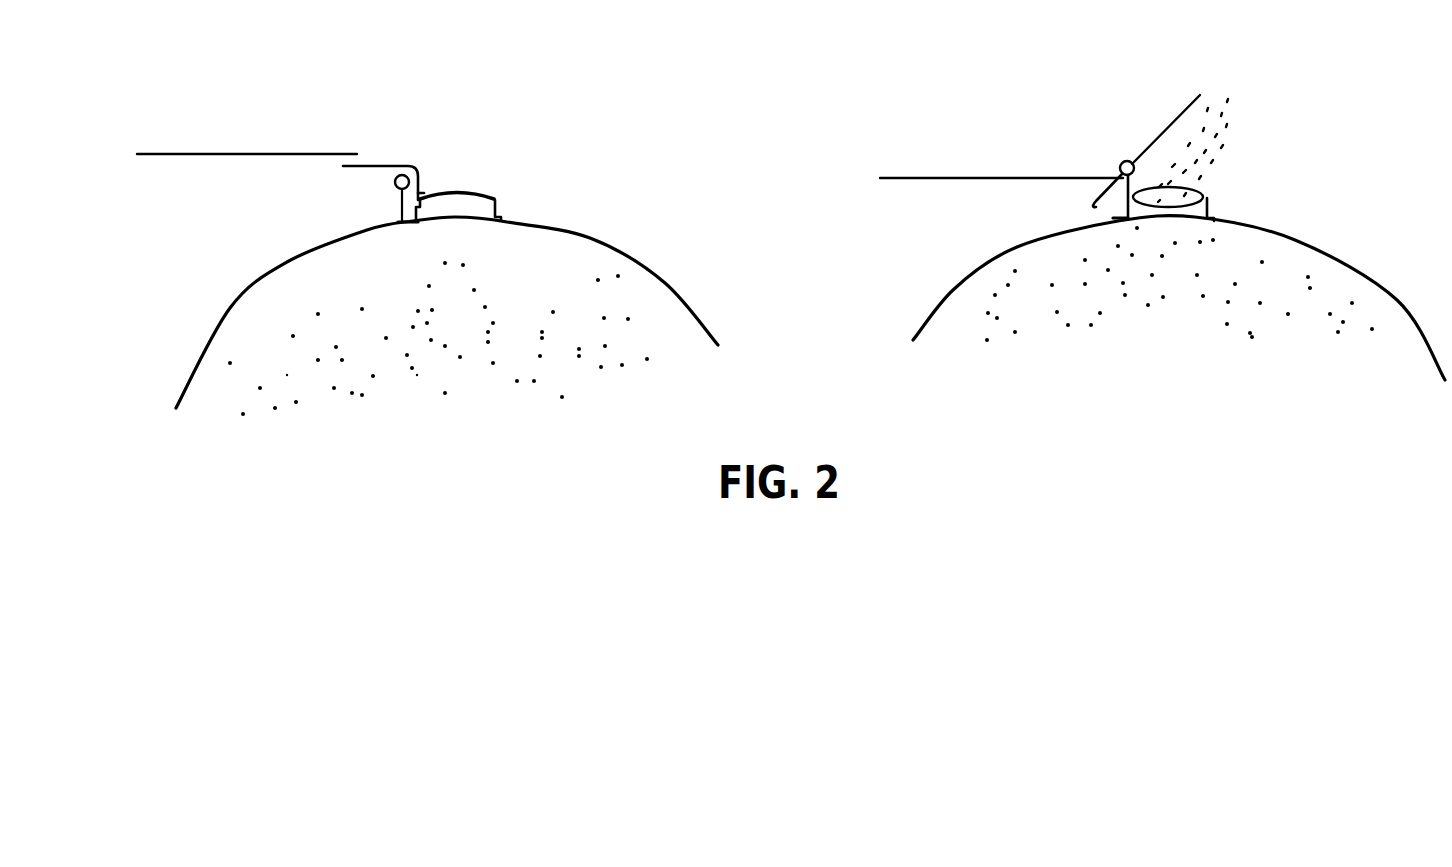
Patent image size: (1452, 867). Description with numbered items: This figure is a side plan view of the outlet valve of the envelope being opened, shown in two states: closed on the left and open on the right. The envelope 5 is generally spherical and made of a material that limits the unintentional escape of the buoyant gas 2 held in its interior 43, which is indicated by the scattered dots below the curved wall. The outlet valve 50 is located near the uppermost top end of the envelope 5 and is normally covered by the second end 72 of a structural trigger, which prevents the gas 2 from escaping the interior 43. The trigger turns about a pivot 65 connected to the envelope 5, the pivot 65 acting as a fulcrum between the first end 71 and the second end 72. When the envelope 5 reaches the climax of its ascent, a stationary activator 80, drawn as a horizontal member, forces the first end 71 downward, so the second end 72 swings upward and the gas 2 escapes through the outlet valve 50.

The gas 2 is at (284, 347).
The envelope 5 is at (680, 295).
The interior 43 is at (230, 365).
The outlet valve 50 is at (497, 204).
The pivot 65 is at (396, 186).
The first end 71 is at (352, 172).
The second end 72 is at (487, 197).
The activator 80 is at (348, 152).